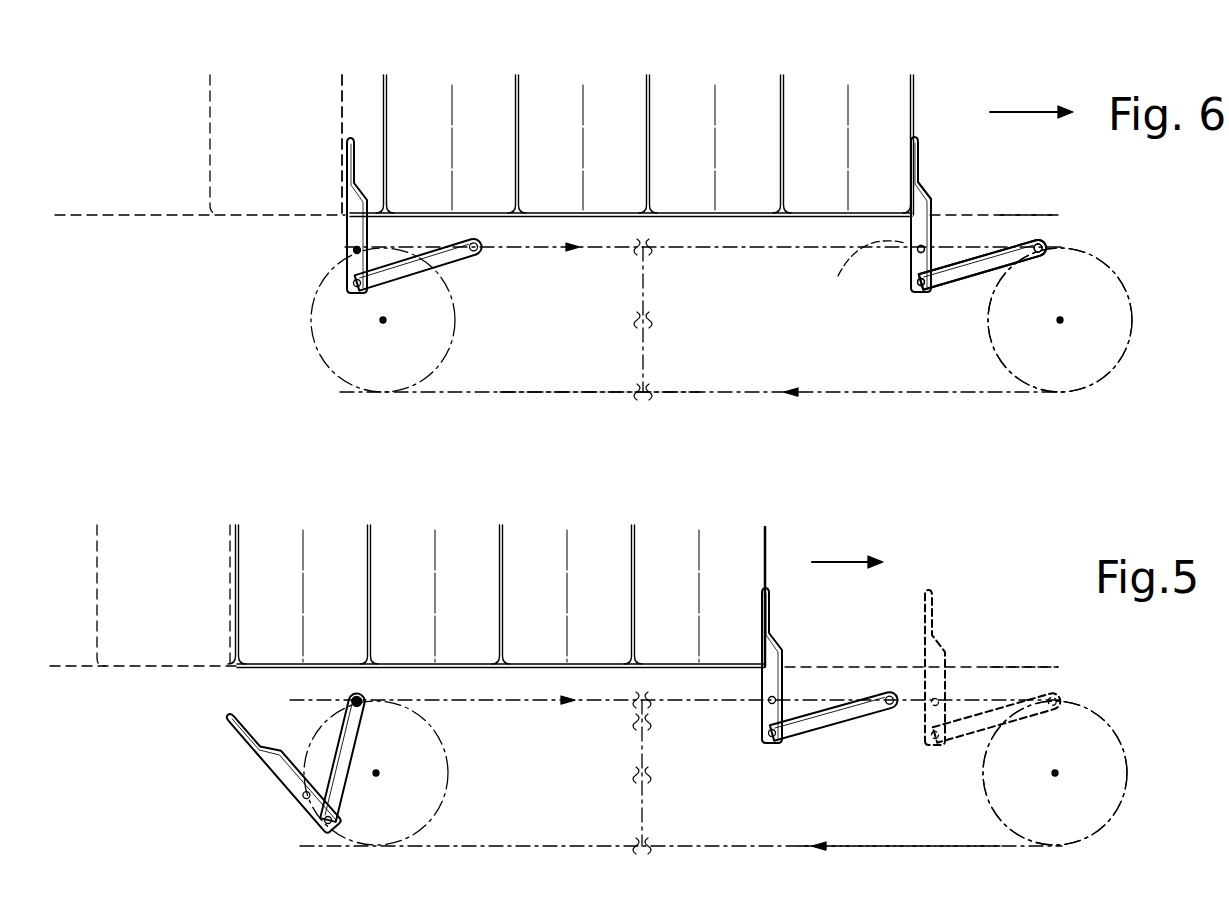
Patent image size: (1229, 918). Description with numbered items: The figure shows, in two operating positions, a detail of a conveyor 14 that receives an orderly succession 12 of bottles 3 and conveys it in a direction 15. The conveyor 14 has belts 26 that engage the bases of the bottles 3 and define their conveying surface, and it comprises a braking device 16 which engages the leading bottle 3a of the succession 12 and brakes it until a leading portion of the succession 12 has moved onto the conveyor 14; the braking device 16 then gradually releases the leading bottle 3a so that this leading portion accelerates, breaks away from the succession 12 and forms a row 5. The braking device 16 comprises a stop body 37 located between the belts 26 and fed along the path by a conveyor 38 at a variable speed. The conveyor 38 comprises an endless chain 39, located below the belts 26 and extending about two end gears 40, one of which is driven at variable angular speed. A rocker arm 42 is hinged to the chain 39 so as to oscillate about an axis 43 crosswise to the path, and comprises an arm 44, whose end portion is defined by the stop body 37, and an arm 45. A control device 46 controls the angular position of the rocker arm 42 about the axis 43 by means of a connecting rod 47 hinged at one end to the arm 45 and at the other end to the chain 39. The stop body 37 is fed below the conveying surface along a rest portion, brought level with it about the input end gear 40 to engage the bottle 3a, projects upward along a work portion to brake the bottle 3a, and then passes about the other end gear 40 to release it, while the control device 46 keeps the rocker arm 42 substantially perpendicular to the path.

In FIG. 5, the bottle 3 is at (263, 643).
In FIG. 6, the leading bottle 3a is at (315, 100).
In FIG. 5, the leading bottle 3a is at (722, 562).
In FIG. 6, the row 5 is at (564, 50).
In FIG. 5, the orderly succession of bottles 12 is at (302, 500).
In FIG. 6, the conveyor 14 is at (999, 206).
In FIG. 5, the conveyor 14 is at (960, 650).
In FIG. 6, the direction 15 is at (1028, 111).
In FIG. 5, the direction 15 is at (825, 561).
In FIG. 6, the braking device 16 is at (1148, 312).
In FIG. 5, the braking device 16 is at (1142, 754).
In FIG. 6, the belt 26 is at (1025, 215).
In FIG. 5, the belt 26 is at (1012, 668).
In FIG. 6, the stop body 37 is at (362, 152).
In FIG. 5, the stop body 37 is at (796, 643).
In FIG. 6, the conveyor 38 is at (706, 402).
In FIG. 5, the conveyor 38 is at (713, 860).
In FIG. 6, the endless chain 39 is at (612, 395).
In FIG. 5, the endless chain 39 is at (950, 848).
In FIG. 6, the end gear 40 is at (430, 330).
In FIG. 5, the end gear 40 is at (368, 810).
In FIG. 6, the rocker arm 42 is at (898, 264).
In FIG. 6, the axis 43 is at (856, 267).
In FIG. 6, the arm 44 is at (920, 210).
In FIG. 6, the arm 45 is at (916, 268).
In FIG. 6, the control device 46 is at (1066, 240).
In FIG. 6, the connecting rod 47 is at (973, 270).